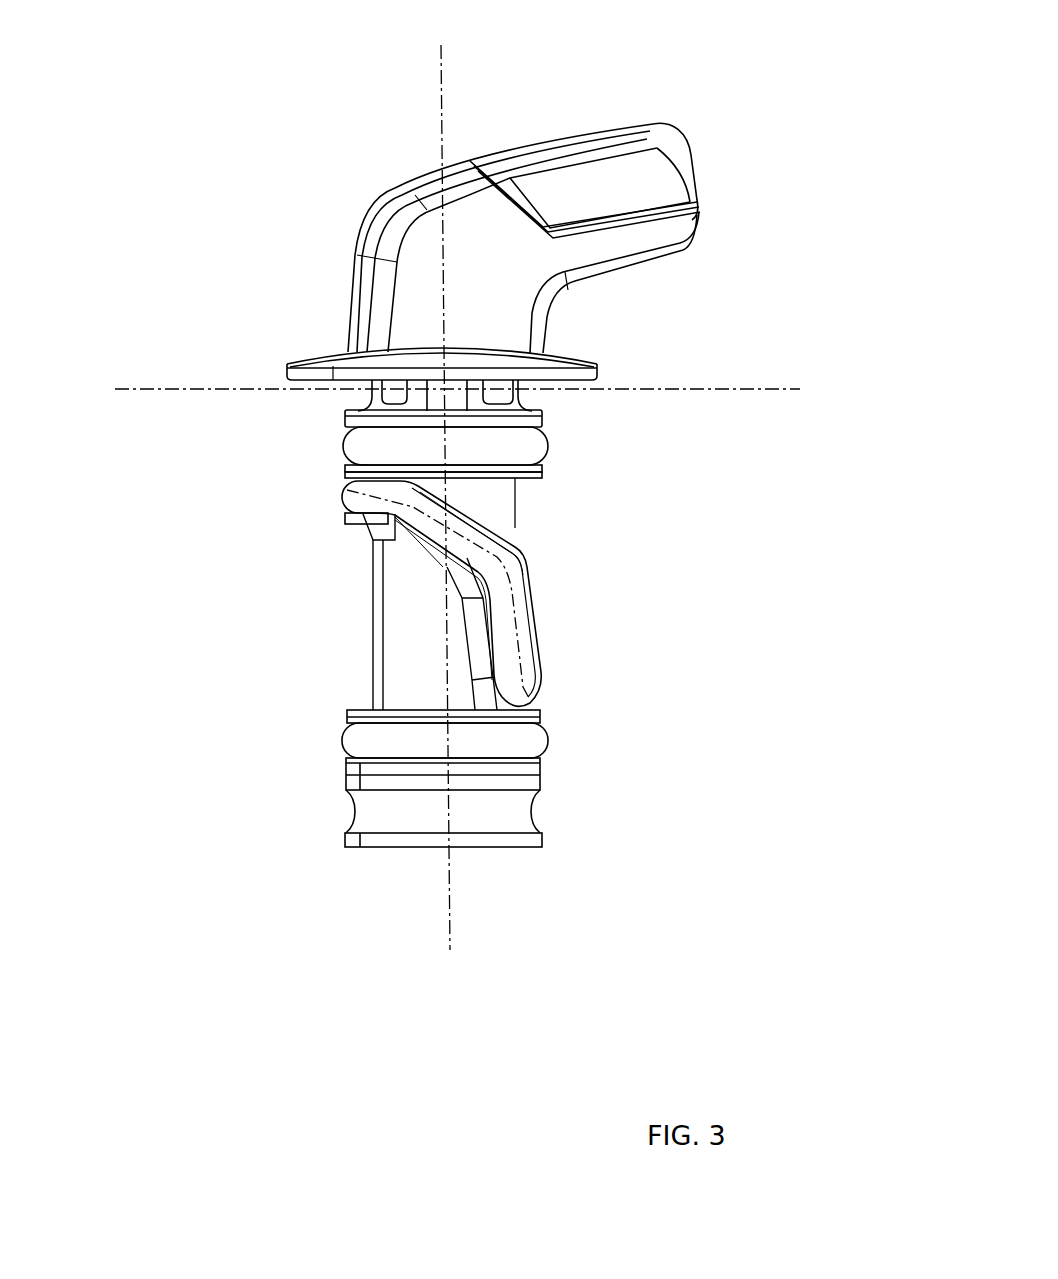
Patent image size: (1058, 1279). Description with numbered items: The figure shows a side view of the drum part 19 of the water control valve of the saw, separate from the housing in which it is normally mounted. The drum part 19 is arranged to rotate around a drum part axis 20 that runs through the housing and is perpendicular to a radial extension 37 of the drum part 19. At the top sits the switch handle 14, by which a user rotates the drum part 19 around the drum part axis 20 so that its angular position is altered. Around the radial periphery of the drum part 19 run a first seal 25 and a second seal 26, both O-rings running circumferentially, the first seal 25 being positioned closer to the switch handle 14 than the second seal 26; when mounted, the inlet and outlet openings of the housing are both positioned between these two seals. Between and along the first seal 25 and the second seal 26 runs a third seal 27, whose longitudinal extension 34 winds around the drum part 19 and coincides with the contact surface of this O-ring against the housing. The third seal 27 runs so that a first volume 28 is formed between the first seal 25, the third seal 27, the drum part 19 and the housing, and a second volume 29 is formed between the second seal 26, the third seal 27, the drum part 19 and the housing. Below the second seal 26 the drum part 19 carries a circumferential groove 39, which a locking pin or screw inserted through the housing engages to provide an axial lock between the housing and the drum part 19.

The drum part 19 is at (292, 107).
The switch handle 14 is at (566, 193).
The radial extension 37 is at (597, 390).
The first seal 25 is at (368, 446).
The third seal 27 is at (368, 500).
The first volume 28 is at (499, 498).
The second volume 29 is at (407, 606).
The longitudinal extension 34 is at (530, 602).
The second seal 26 is at (387, 741).
The circumferential groove 39 is at (376, 804).
The drum part axis 20 is at (450, 885).